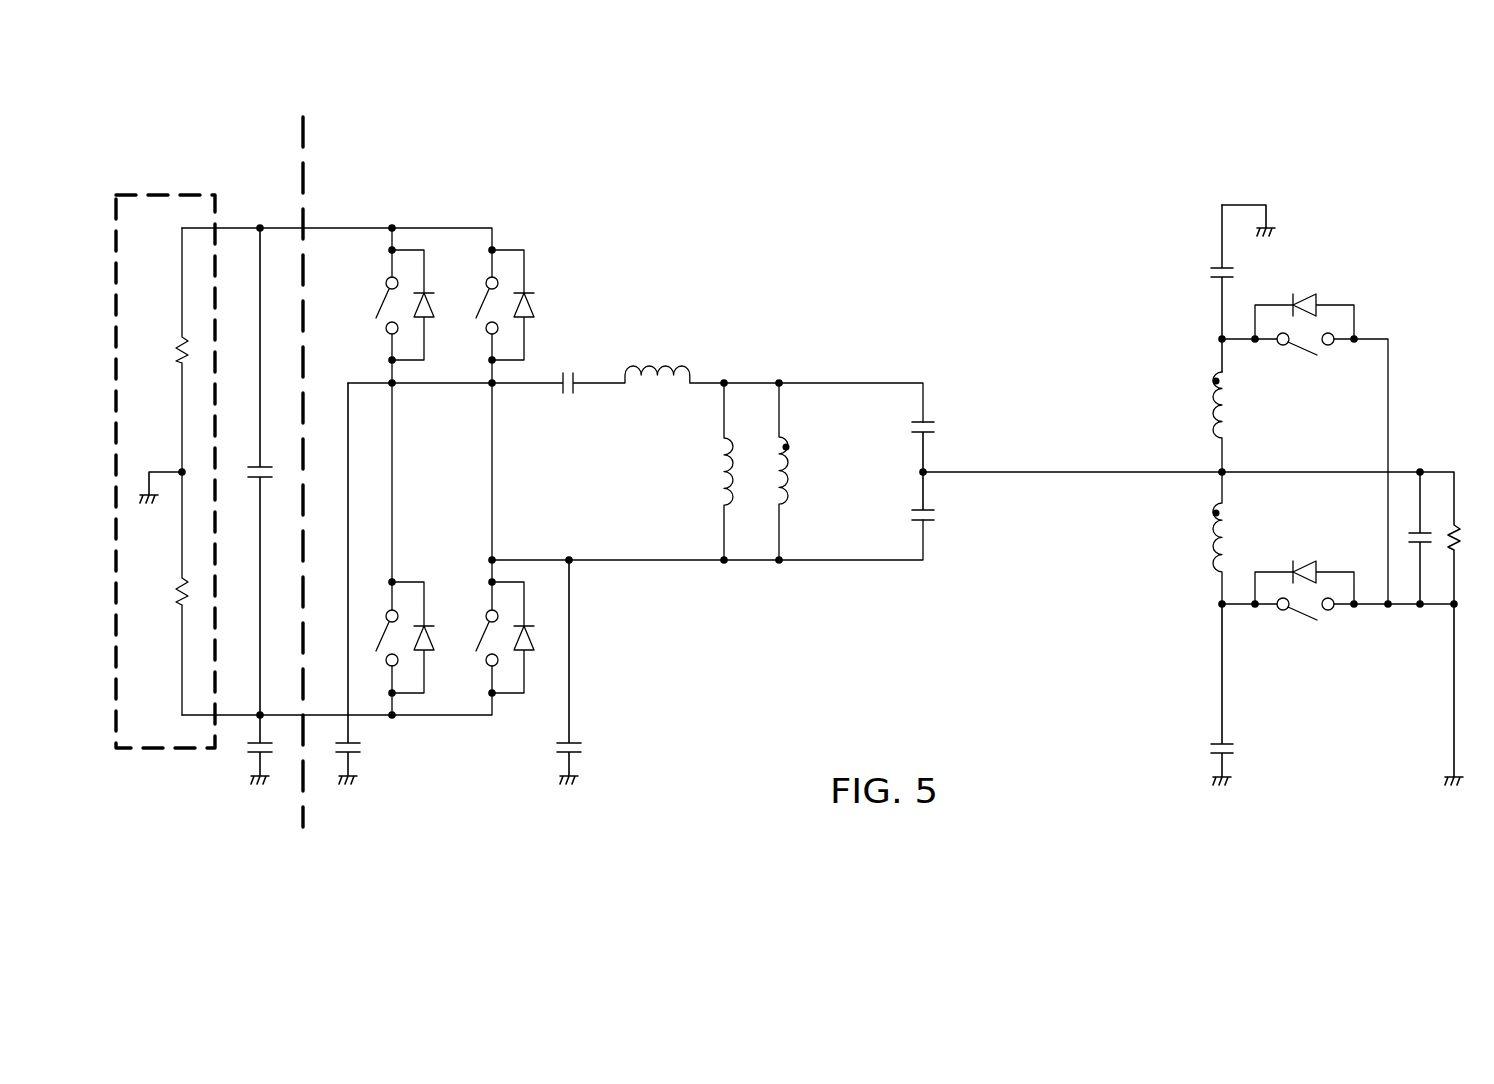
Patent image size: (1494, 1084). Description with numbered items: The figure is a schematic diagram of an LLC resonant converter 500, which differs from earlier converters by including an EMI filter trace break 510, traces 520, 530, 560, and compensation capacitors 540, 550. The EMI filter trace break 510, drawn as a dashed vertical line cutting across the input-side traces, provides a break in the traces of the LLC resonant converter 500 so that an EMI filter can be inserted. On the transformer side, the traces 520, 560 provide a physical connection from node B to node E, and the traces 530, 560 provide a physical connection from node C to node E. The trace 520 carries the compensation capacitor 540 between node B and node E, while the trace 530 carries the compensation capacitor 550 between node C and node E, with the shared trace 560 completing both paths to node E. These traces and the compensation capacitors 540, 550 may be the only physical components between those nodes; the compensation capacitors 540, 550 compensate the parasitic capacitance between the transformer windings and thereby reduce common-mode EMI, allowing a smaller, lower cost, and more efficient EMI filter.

The LLC resonant converter 500 is at (1112, 116).
The EMI filter trace break 510 is at (303, 180).
The trace 520 is at (850, 381).
The trace 530 is at (862, 562).
The compensation capacitor 540 is at (912, 426).
The compensation capacitor 550 is at (912, 518).
The trace 560 is at (1138, 470).